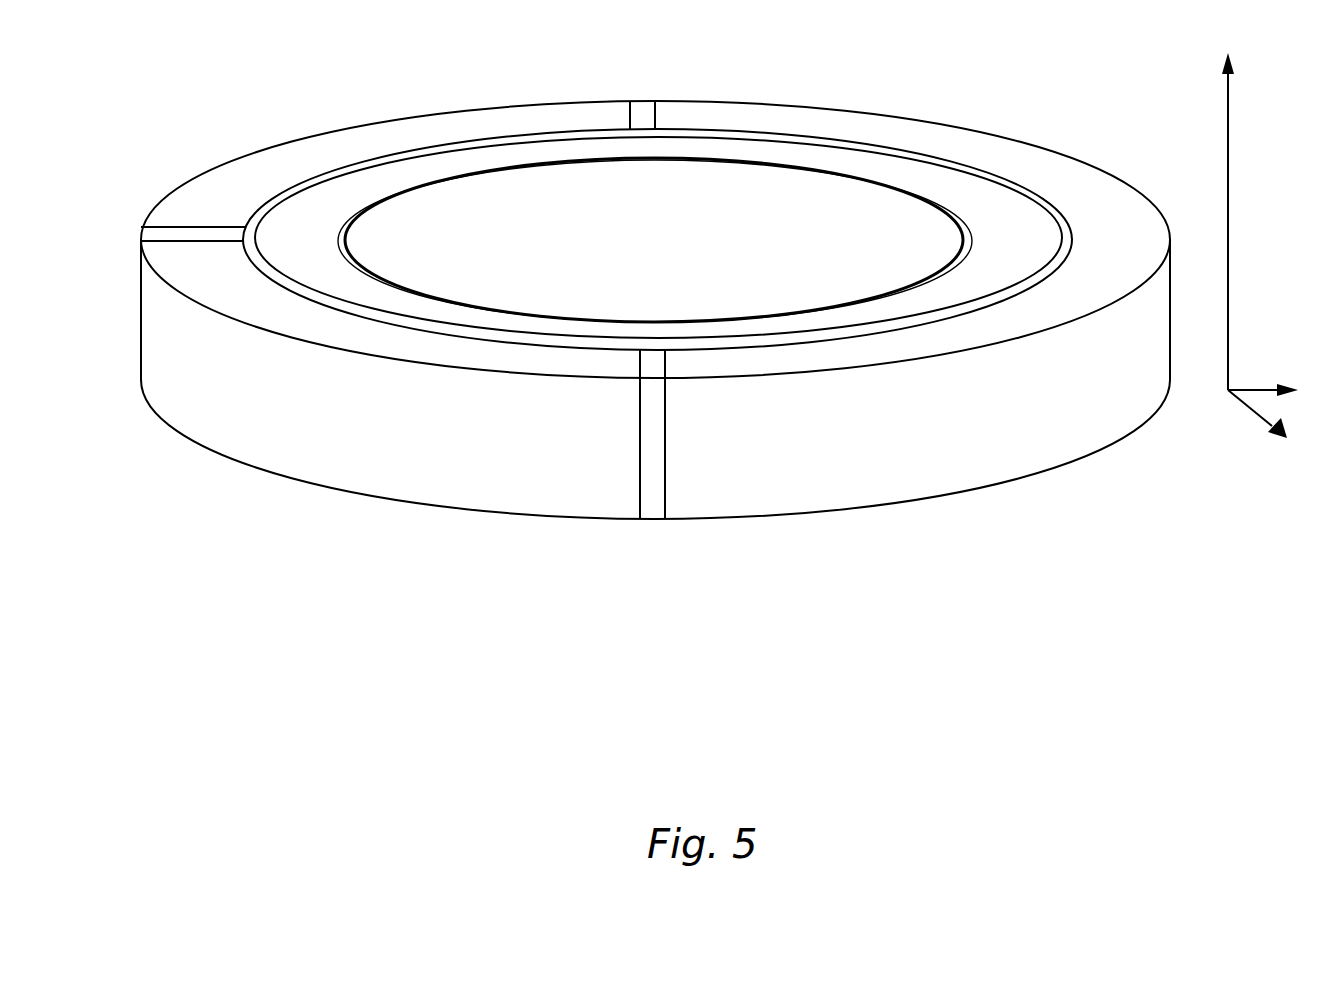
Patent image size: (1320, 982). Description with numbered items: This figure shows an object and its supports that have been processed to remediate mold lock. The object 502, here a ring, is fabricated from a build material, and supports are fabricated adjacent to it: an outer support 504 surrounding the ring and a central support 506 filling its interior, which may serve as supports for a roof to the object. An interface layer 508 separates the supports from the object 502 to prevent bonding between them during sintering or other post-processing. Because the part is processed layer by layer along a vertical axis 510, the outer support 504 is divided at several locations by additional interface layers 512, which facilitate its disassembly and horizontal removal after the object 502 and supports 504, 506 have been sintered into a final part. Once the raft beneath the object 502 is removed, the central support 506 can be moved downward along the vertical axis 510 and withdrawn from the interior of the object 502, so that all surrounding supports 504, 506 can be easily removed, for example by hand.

The object 502 is at (327, 254).
The outer support 504 is at (255, 150).
The central support 506 is at (638, 254).
The interface layer 508 is at (973, 298).
The vertical axis 510 is at (1228, 128).
The additional interface layers 512 is at (193, 232).